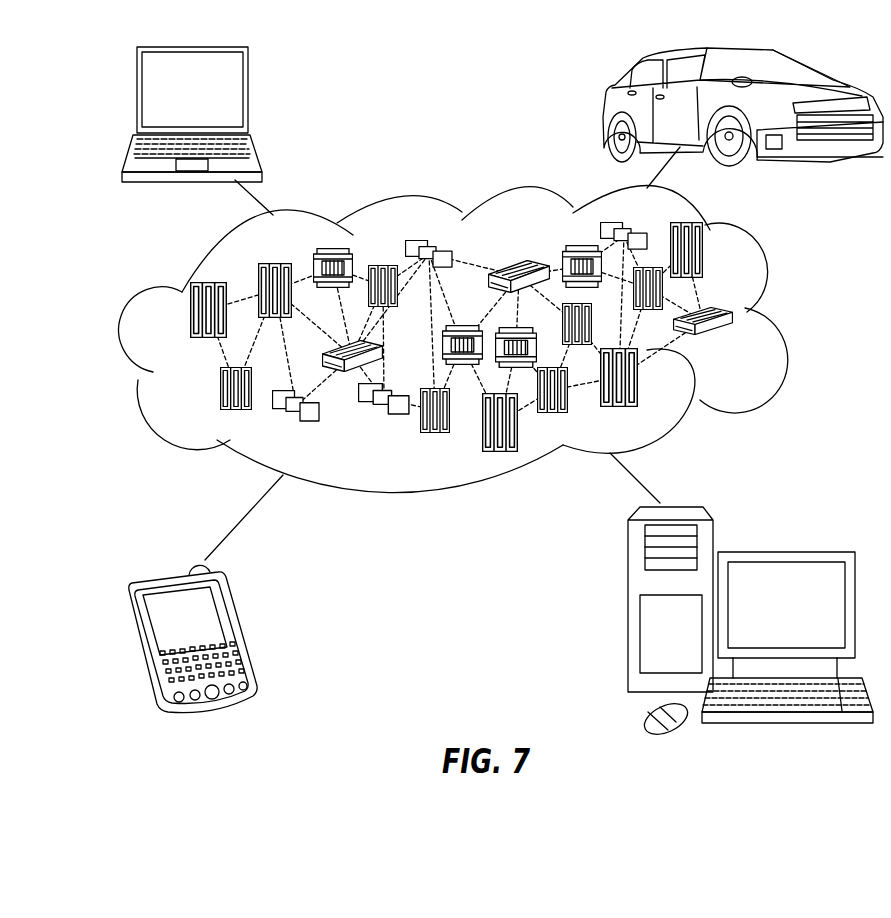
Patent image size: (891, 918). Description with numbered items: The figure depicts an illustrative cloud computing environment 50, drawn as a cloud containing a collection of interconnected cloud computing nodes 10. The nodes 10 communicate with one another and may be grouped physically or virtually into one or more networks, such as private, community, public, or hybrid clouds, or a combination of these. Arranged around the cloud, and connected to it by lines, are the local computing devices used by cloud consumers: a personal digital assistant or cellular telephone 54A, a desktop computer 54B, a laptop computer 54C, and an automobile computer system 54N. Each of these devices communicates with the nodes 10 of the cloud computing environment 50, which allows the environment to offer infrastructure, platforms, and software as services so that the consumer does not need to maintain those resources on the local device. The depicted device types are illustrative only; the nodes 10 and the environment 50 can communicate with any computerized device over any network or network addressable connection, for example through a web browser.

The cloud computing node 10 is at (740, 344).
The cloud computing environment 50 is at (785, 316).
The personal digital assistant or cellular telephone 54A is at (237, 632).
The desktop computer 54B is at (783, 552).
The laptop computer 54C is at (248, 98).
The automobile computer system 54N is at (605, 113).